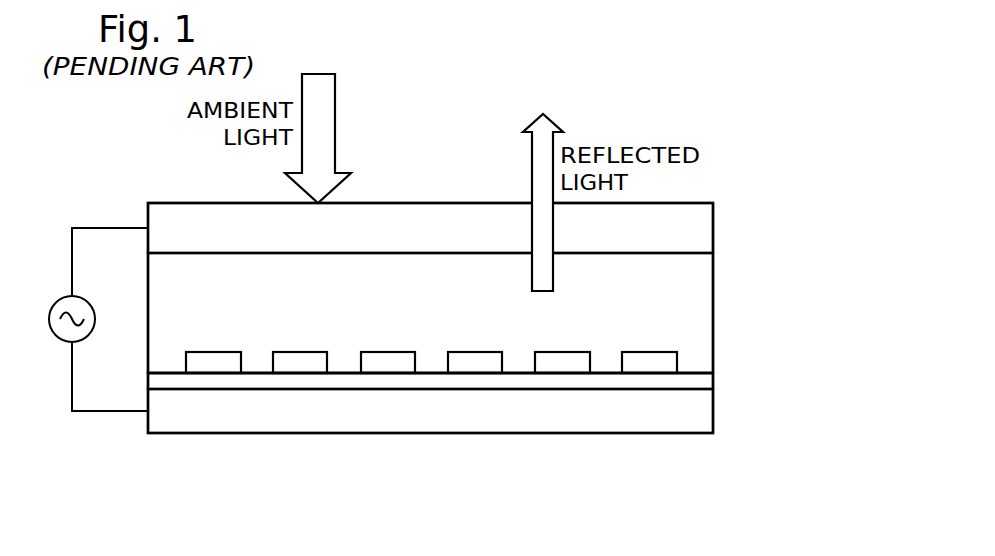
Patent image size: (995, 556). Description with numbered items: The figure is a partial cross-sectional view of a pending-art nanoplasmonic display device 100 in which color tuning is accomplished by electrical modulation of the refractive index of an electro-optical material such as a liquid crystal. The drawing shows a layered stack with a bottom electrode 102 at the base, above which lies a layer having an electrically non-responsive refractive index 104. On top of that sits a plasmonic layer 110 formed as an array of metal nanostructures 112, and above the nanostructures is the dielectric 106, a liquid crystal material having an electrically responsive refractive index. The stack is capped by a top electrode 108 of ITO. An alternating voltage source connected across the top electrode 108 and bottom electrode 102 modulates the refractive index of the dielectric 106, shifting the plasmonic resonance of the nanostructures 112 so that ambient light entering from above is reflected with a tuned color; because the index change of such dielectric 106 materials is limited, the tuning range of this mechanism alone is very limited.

The device 100 is at (684, 131).
The bottom electrode 102 is at (705, 416).
The electrically non-responsive refractive index layer 104 is at (705, 383).
The dielectric 106 is at (160, 271).
The top electrode (ITO) 108 is at (705, 231).
The plasmonic layer: metal nanostructure array 110 is at (170, 362).
The metal nanostructures 112 is at (293, 352).